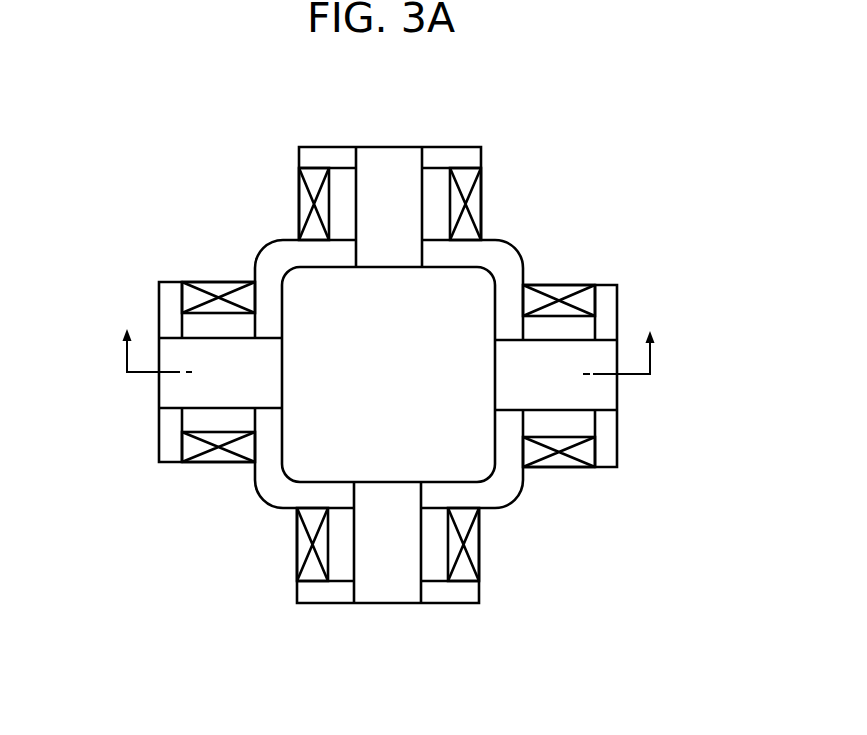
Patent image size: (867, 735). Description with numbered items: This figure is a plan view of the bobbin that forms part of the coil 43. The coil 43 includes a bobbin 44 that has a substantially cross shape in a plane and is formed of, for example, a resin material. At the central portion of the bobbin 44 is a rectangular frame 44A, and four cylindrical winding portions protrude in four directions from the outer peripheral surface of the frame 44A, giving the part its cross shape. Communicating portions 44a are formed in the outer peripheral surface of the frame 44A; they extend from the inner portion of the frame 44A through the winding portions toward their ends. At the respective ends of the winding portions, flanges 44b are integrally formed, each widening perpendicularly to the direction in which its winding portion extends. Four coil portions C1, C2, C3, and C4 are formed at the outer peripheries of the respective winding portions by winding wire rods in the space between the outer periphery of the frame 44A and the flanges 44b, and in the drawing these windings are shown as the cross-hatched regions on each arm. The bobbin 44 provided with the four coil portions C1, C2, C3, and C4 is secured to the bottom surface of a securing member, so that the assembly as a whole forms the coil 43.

The coil 43 is at (618, 203).
The bobbin 44 is at (538, 260).
The rectangular frame 44A is at (288, 150).
The communicating portion 44a is at (380, 258).
The flange 44b is at (455, 155).
The coil portion C1 is at (303, 200).
The coil portion C2 is at (466, 567).
The coil portion C3 is at (557, 460).
The coil portion C4 is at (217, 458).